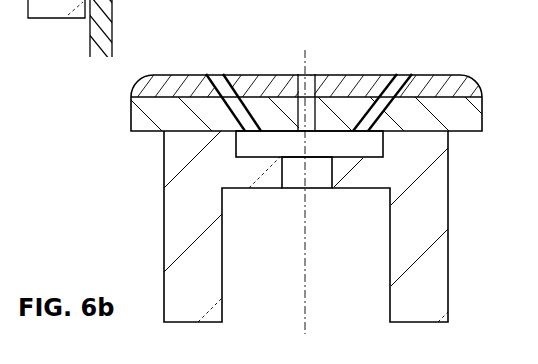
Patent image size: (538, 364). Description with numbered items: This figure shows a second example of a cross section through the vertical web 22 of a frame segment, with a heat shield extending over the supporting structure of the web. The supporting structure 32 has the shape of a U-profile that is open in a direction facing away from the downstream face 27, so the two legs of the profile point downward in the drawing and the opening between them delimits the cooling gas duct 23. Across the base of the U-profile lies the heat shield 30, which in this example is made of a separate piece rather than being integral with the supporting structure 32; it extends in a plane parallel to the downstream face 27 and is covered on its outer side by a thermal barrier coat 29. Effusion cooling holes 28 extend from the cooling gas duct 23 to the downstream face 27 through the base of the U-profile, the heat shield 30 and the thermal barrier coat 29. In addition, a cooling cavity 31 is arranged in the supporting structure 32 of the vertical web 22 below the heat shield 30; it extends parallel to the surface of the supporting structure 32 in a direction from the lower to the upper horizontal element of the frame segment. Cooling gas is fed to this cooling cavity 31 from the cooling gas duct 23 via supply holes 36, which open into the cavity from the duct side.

The vertical web 22 is at (282, 226).
The cooling gas duct 23 is at (310, 282).
The downstream face 27 is at (327, 68).
The effusion cooling holes 28 is at (311, 80).
The thermal barrier coat 29 is at (451, 88).
The heat shield 30 is at (462, 122).
The cooling cavity 31 is at (360, 146).
The supporting structure 32 is at (411, 238).
The supply holes 36 is at (315, 181).